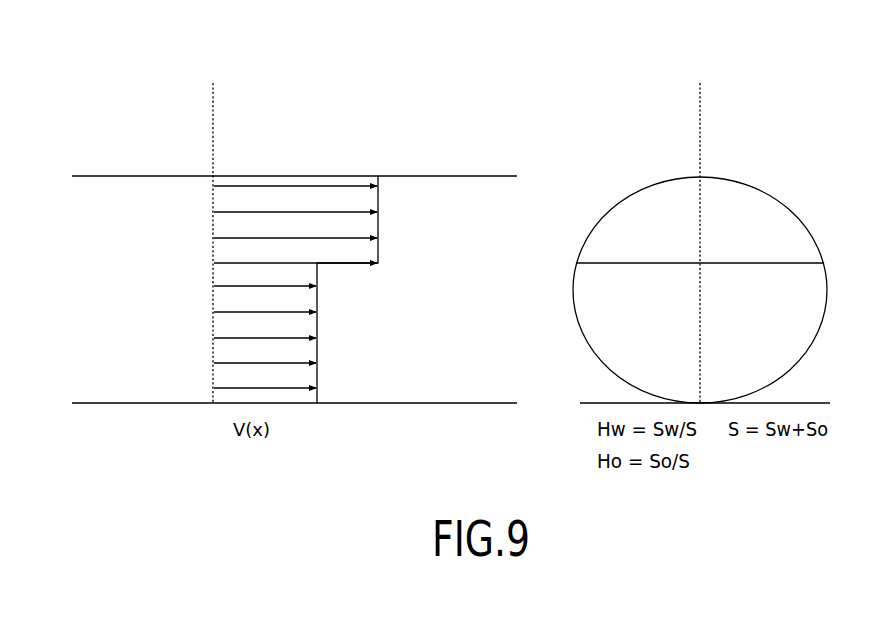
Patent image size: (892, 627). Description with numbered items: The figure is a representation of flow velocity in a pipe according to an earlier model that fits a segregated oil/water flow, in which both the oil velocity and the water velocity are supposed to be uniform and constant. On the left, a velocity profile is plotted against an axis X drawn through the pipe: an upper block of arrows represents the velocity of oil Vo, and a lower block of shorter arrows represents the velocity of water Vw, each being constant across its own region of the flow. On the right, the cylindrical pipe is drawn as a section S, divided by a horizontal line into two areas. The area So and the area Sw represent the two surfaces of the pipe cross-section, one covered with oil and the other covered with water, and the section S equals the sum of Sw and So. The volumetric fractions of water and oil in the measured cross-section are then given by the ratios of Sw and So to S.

The x axis X is at (223, 241).
The velocity of oil Vo is at (312, 219).
The velocity of water Vw is at (283, 333).
The section of cylindrical pipe S is at (700, 242).
The surface of pipe covered with water So is at (700, 248).
The surface of pipe covered with oil Sw is at (705, 341).